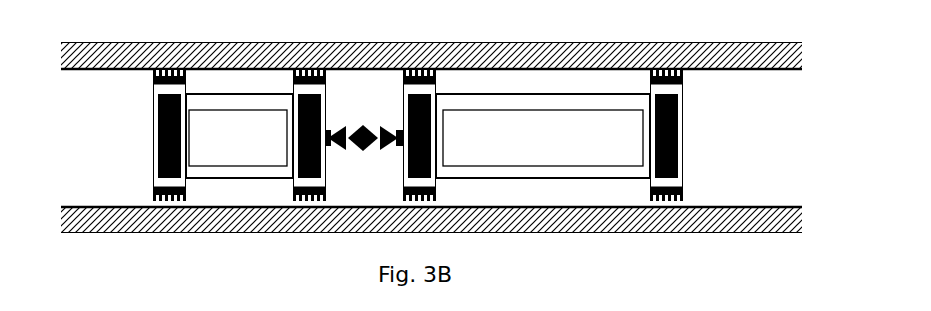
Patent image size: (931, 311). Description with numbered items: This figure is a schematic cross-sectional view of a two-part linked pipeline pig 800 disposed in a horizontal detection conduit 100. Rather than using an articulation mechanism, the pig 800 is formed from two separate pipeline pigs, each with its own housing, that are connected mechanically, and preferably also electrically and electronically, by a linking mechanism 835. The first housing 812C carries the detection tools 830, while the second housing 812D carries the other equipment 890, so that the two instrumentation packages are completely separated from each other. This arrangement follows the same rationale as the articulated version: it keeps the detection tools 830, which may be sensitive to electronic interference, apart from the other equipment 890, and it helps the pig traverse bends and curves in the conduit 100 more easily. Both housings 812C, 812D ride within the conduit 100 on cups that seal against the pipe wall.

The horizontal conduit 100 is at (749, 73).
The pipeline pig 800 is at (134, 170).
The housing 812C is at (239, 135).
The housing 812D is at (543, 136).
The detection tools 830 is at (230, 108).
The linking mechanism 835 is at (372, 122).
The other equipment 890 is at (578, 108).